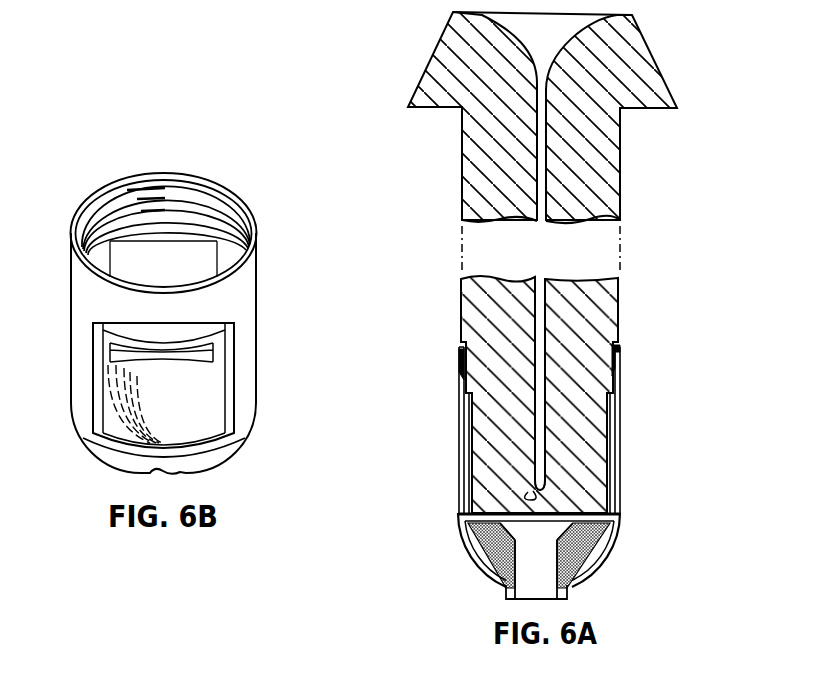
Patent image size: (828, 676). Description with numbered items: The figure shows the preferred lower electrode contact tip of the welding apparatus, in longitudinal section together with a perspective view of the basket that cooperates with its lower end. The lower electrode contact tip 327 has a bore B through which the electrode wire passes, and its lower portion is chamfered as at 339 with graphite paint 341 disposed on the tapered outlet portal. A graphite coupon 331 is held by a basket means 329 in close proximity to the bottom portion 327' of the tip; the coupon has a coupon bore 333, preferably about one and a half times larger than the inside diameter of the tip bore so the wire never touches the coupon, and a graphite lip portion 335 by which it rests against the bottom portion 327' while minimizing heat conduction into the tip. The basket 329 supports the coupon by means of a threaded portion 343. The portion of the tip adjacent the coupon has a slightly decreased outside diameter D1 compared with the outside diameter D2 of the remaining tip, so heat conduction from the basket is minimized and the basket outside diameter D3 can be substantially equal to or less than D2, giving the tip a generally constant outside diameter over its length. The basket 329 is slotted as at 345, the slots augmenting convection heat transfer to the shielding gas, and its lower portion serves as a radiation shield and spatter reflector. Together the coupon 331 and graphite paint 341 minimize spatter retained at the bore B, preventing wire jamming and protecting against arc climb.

In FIG. 6A, the lower electrode contact tip 327 is at (542, 117).
In FIG. 6A, the bottom portion of the electrode contact tip 327' is at (563, 394).
In FIG. 6A, the bore B is at (540, 200).
In FIG. 6A, the basket means 329 is at (461, 482).
In FIG. 6B, the basket means 329 is at (240, 302).
In FIG. 6A, the graphite coupon 331 is at (605, 562).
In FIG. 6A, the coupon bore 333 is at (528, 588).
In FIG. 6A, the graphite lip portion 335 is at (610, 512).
In FIG. 6A, the chamfered lower portion of the bore 339 is at (530, 490).
In FIG. 6A, the graphite paint 341 is at (467, 512).
In FIG. 6A, the threaded portion 343 is at (613, 367).
In FIG. 6B, the threaded portion 343 is at (185, 203).
In FIG. 6B, the slots 345 is at (188, 255).
In FIG. 6A, the decreased outside diameter D1 is at (472, 395).
In FIG. 6A, the outside diameter of the electrode contact tip D2 is at (461, 316).
In FIG. 6A, the outside diameter of the basket D3 is at (459, 447).